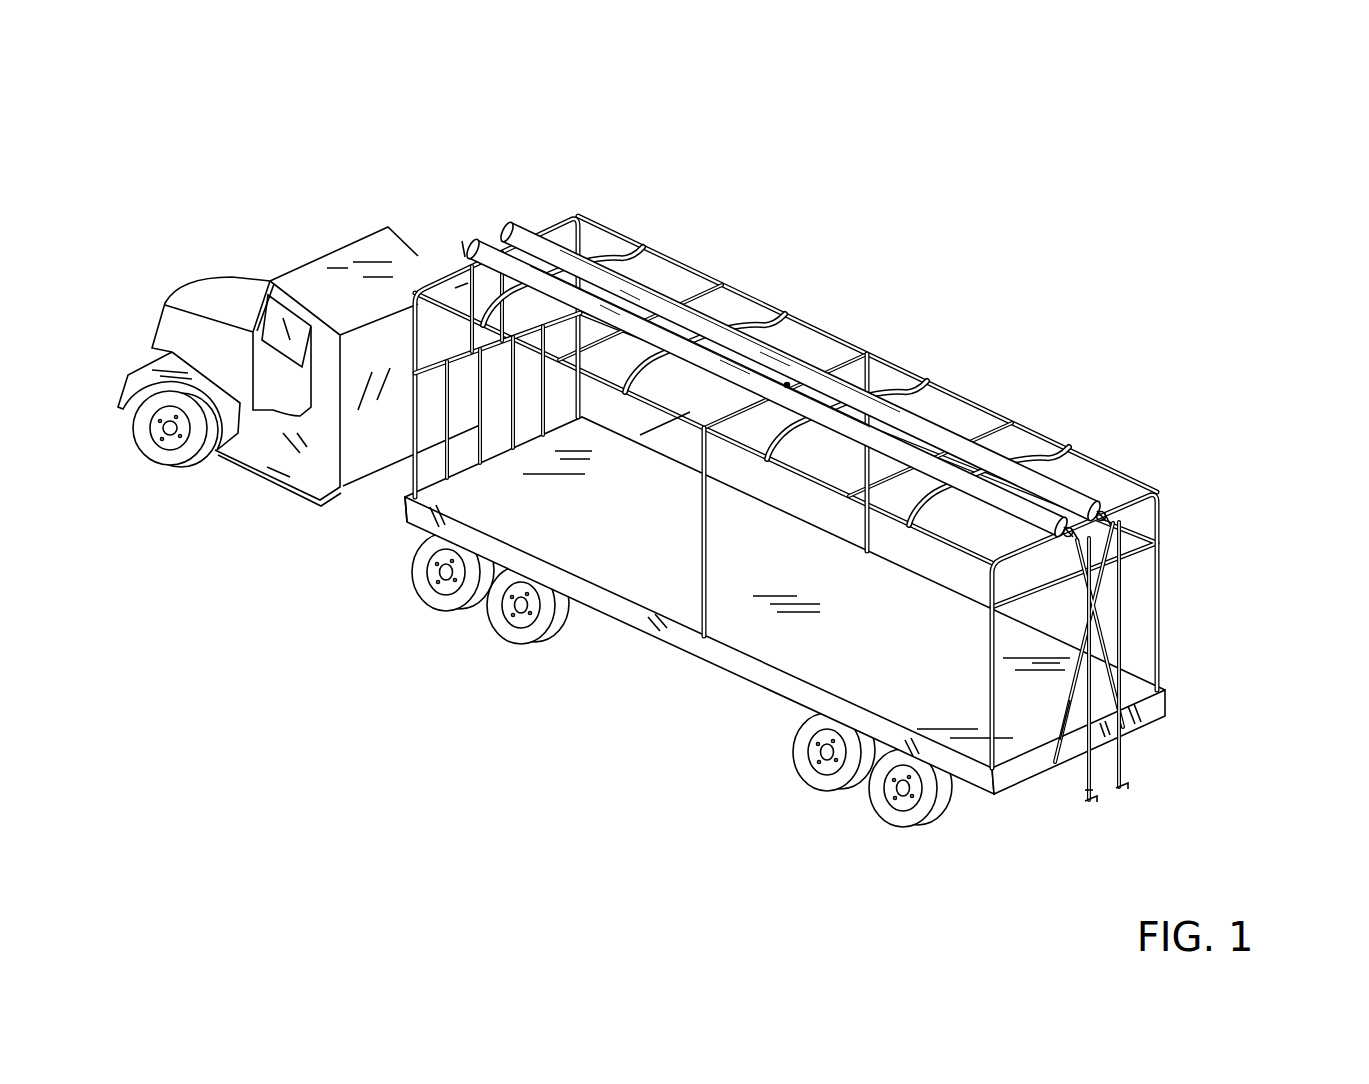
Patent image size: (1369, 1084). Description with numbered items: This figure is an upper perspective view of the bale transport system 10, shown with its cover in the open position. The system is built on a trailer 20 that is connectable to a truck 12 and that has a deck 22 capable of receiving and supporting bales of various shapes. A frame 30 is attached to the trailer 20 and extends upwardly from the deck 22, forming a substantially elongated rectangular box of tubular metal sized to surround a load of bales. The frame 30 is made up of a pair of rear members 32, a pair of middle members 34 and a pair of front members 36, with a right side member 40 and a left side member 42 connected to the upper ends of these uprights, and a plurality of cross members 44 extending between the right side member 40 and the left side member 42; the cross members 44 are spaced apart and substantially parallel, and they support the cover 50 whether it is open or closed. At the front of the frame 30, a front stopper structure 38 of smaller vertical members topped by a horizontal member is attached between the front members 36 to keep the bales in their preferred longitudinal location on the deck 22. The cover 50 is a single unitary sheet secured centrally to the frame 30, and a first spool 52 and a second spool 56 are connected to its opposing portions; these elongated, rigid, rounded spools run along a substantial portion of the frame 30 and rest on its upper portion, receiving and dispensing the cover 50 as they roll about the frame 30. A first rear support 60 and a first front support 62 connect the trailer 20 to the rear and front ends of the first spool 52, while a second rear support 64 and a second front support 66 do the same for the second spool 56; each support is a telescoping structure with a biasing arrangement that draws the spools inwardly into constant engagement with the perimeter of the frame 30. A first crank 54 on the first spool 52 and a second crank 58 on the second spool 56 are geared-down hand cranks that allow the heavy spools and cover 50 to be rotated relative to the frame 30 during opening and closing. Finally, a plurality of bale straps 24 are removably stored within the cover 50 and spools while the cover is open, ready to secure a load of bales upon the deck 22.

The bale transport system 10 is at (1028, 210).
The truck 12 is at (303, 272).
The trailer 20 is at (785, 622).
The deck 22 is at (645, 578).
The bale straps 24 is at (632, 250).
The frame 30 is at (783, 491).
The rear members 32 is at (987, 688).
The middle members 34 is at (706, 560).
The front members 36 is at (584, 243).
The front stopper structure 38 is at (422, 525).
The right side member 40 is at (758, 300).
The left side member 42 is at (668, 430).
The cross members 44 is at (555, 218).
The cover 50 is at (787, 385).
The first spool 52 is at (1102, 514).
The first crank 54 is at (1122, 767).
The second spool 56 is at (1065, 545).
The second crank 58 is at (1090, 785).
The first rear support 60 is at (1068, 707).
The first front support 62 is at (460, 290).
The second rear support 64 is at (1107, 630).
The second front support 66 is at (466, 244).